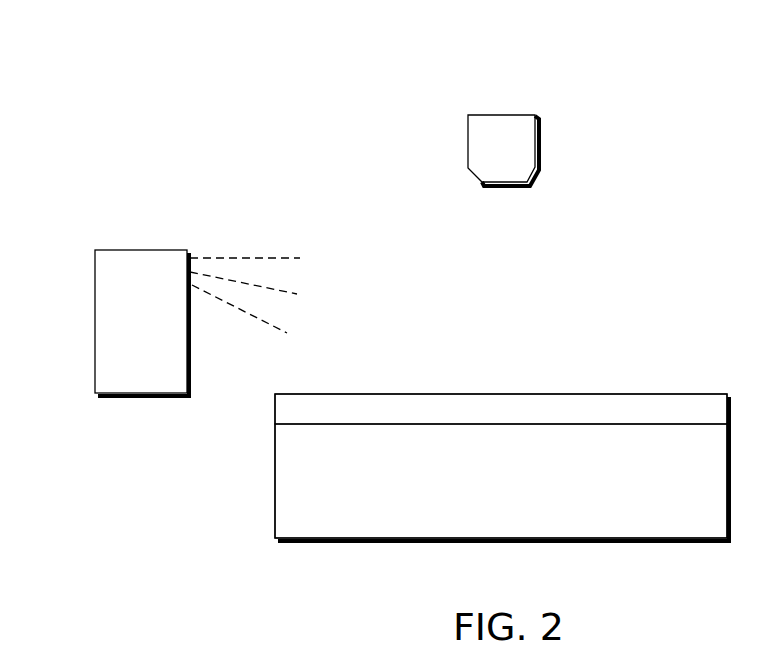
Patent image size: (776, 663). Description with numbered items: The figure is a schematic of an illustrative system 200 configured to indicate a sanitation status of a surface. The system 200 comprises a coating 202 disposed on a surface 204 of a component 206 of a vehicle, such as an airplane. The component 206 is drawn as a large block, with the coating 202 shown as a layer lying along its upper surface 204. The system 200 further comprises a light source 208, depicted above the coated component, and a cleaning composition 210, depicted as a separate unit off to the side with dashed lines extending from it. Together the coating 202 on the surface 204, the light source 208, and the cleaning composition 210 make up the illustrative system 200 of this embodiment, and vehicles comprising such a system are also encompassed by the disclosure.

The system 200 is at (122, 56).
The coating 202 is at (505, 405).
The surface 204 is at (648, 427).
The component 206 is at (531, 497).
The light source 208 is at (493, 148).
The cleaning composition 210 is at (168, 336).